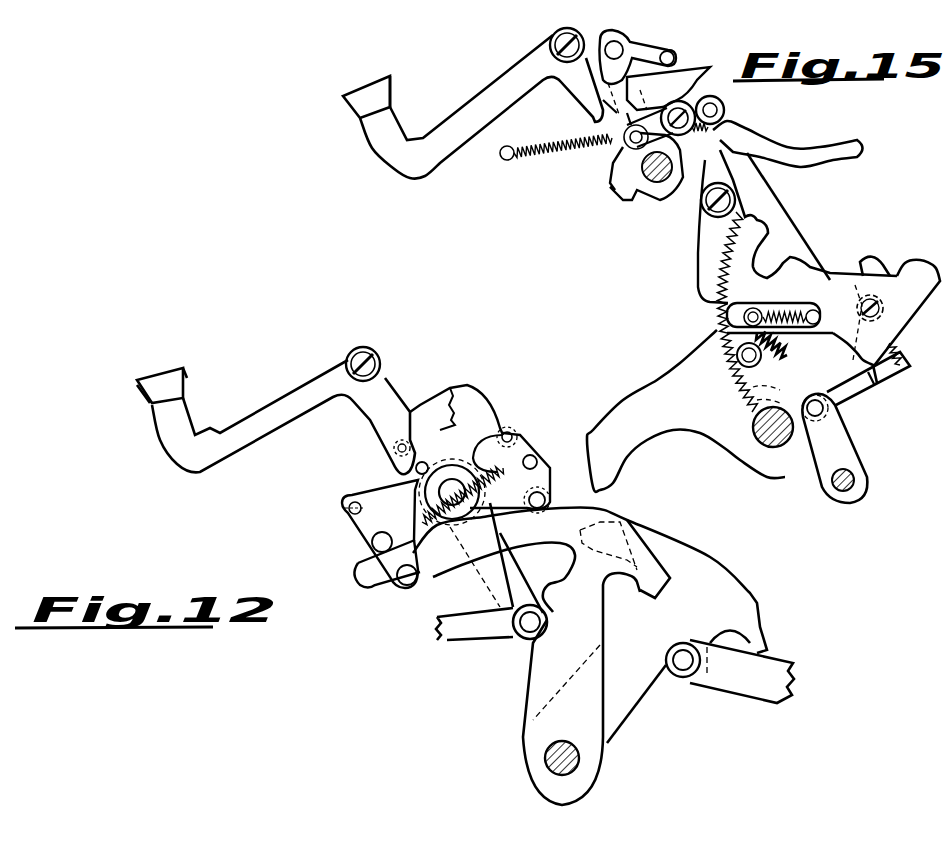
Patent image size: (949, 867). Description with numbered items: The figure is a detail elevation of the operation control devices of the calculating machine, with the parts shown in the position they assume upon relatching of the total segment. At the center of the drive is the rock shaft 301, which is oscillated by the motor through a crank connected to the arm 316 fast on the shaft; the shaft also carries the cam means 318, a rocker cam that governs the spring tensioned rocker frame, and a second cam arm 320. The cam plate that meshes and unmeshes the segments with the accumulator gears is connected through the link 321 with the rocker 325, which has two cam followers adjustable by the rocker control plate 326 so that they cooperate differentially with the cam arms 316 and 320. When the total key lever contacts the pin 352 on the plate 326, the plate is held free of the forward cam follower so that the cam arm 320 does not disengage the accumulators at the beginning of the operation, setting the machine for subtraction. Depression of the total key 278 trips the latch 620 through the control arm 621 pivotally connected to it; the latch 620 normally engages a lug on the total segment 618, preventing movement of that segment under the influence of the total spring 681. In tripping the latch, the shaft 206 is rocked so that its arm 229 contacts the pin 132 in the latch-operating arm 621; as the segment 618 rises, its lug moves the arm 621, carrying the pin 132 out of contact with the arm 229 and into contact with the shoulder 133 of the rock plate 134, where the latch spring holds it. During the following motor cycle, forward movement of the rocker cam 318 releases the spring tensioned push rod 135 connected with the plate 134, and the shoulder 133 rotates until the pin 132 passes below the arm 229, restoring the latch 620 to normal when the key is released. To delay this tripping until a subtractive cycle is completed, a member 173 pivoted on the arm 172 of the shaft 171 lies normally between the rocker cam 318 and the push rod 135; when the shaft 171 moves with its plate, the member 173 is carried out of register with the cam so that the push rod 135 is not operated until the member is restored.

In FIG. 12, the total key 278 is at (263, 410).
In FIG. 15, the total key 278 is at (384, 95).
In FIG. 15, the shaft 206 is at (625, 50).
In FIG. 15, the arm 229 is at (620, 130).
In FIG. 15, the pin 132 is at (613, 143).
In FIG. 15, the shoulder 133 is at (613, 163).
In FIG. 15, the rock plate 134 is at (655, 194).
In FIG. 15, the push rod 135 is at (760, 192).
In FIG. 15, the control arm 621 is at (826, 143).
In FIG. 15, the latch 620 is at (698, 256).
In FIG. 15, the total segment 618 is at (715, 318).
In FIG. 15, the cam means 318 is at (654, 388).
In FIG. 15, the total spring 681 is at (787, 335).
In FIG. 12, the rock shaft 301 is at (546, 760).
In FIG. 15, the rock shaft 301 is at (765, 440).
In FIG. 15, the pivoted member 173 is at (853, 400).
In FIG. 15, the arm 172 is at (848, 449).
In FIG. 15, the shaft 171 is at (855, 480).
In FIG. 12, the rocker control plate 326 is at (477, 400).
In FIG. 12, the pin 352 is at (416, 467).
In FIG. 12, the rocker 325 is at (395, 490).
In FIG. 12, the link 321 is at (467, 630).
In FIG. 12, the cam arm 320 is at (533, 683).
In FIG. 12, the cam arm 316 is at (740, 597).